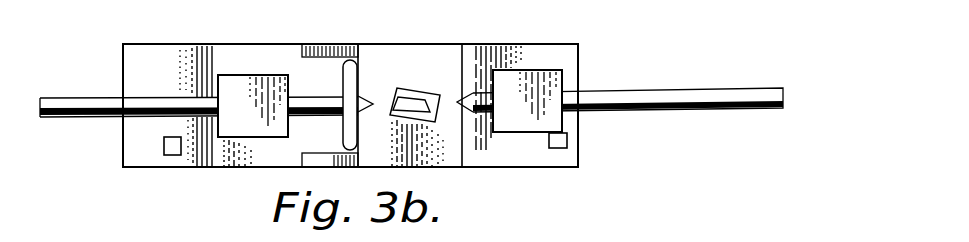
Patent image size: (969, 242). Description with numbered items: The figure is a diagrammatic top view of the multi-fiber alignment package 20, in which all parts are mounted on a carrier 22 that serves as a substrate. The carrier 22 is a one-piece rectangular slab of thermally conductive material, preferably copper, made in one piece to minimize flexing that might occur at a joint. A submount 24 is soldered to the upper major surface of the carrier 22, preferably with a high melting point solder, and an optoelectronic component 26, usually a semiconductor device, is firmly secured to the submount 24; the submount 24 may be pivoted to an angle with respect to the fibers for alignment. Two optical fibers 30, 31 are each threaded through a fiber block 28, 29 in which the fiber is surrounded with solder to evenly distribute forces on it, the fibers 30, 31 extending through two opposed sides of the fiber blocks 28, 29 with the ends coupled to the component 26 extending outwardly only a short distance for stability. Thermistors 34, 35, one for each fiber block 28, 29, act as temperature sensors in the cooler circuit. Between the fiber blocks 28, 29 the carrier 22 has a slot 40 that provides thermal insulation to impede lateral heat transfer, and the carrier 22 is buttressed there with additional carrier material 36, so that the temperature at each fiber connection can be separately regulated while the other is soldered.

The multi-fiber alignment package 20 is at (411, 106).
The carrier 22 is at (550, 167).
The submount 24 is at (392, 98).
The optoelectronic component 26 is at (413, 100).
The fiber block 28 is at (240, 78).
The fiber block 29 is at (520, 70).
The optical fiber 30 is at (63, 103).
The optical fiber 31 is at (713, 90).
The thermistor 34 is at (173, 156).
The thermistor 35 is at (568, 142).
The carrier material 36 is at (354, 46).
The slot 40 is at (345, 126).